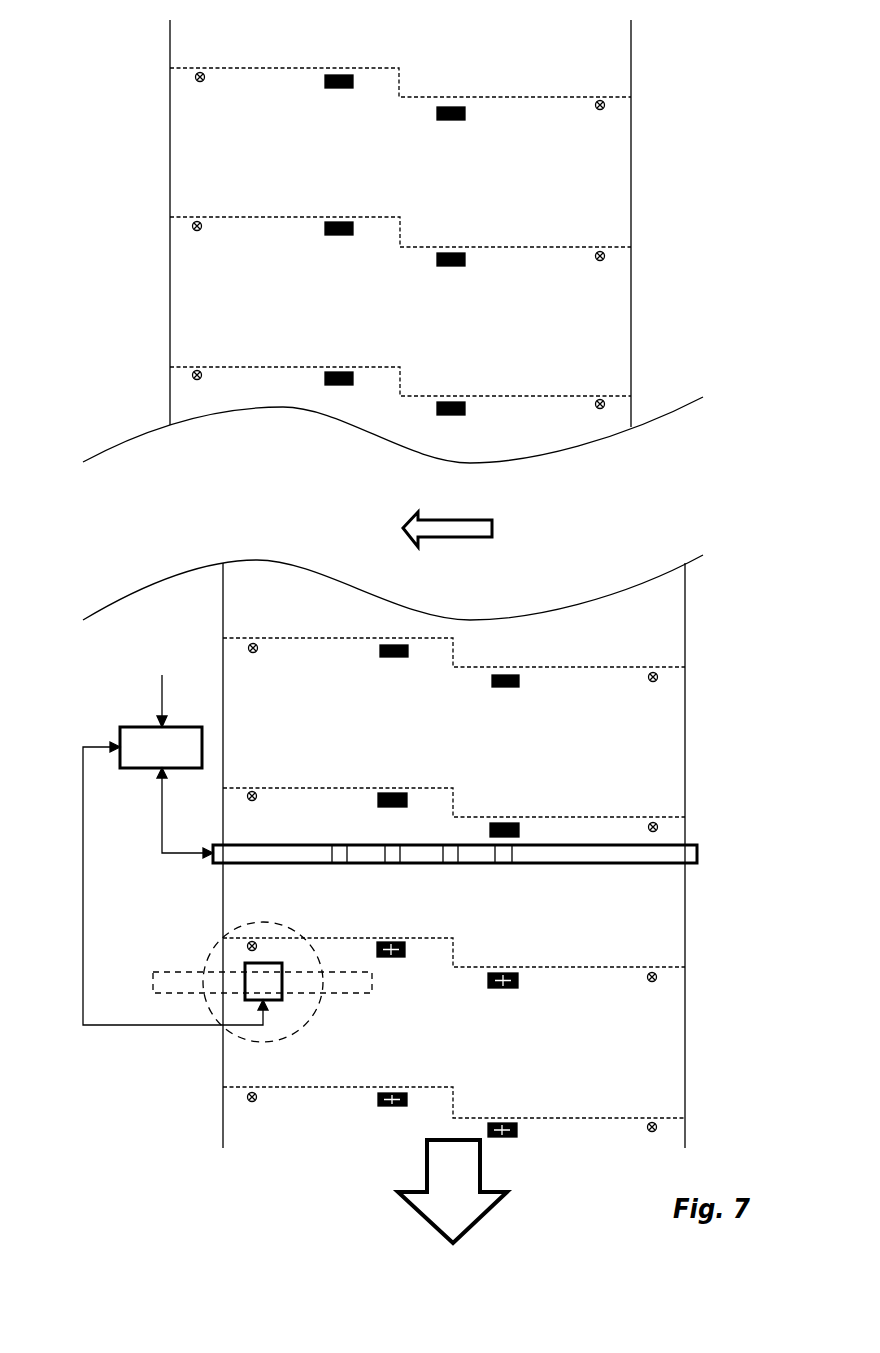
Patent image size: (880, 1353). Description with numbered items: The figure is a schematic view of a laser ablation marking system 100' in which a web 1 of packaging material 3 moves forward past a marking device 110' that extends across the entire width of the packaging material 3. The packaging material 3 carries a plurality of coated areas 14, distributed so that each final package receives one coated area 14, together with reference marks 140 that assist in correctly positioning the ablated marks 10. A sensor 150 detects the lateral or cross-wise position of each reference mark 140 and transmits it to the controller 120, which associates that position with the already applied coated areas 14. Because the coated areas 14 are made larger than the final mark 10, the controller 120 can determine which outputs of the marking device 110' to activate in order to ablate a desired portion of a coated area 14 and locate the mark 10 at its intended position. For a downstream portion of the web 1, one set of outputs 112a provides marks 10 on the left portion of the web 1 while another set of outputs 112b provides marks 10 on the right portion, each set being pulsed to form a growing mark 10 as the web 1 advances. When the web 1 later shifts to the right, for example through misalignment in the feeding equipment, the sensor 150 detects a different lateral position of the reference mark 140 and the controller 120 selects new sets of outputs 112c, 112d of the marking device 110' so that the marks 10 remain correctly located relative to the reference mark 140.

The web 1 is at (693, 343).
The packaging material 3 is at (680, 623).
The ablated mark 10 is at (400, 958).
The coated area 14 is at (340, 75).
The laser ablation marking system 100' is at (157, 910).
The marking device 110' is at (493, 845).
The set of outputs 112a is at (400, 856).
The set of outputs 112b is at (503, 856).
The set of outputs 112c is at (337, 853).
The set of outputs 112d is at (448, 853).
The controller 120 is at (135, 727).
The reference mark 140 is at (195, 222).
The sensor 150 is at (245, 993).